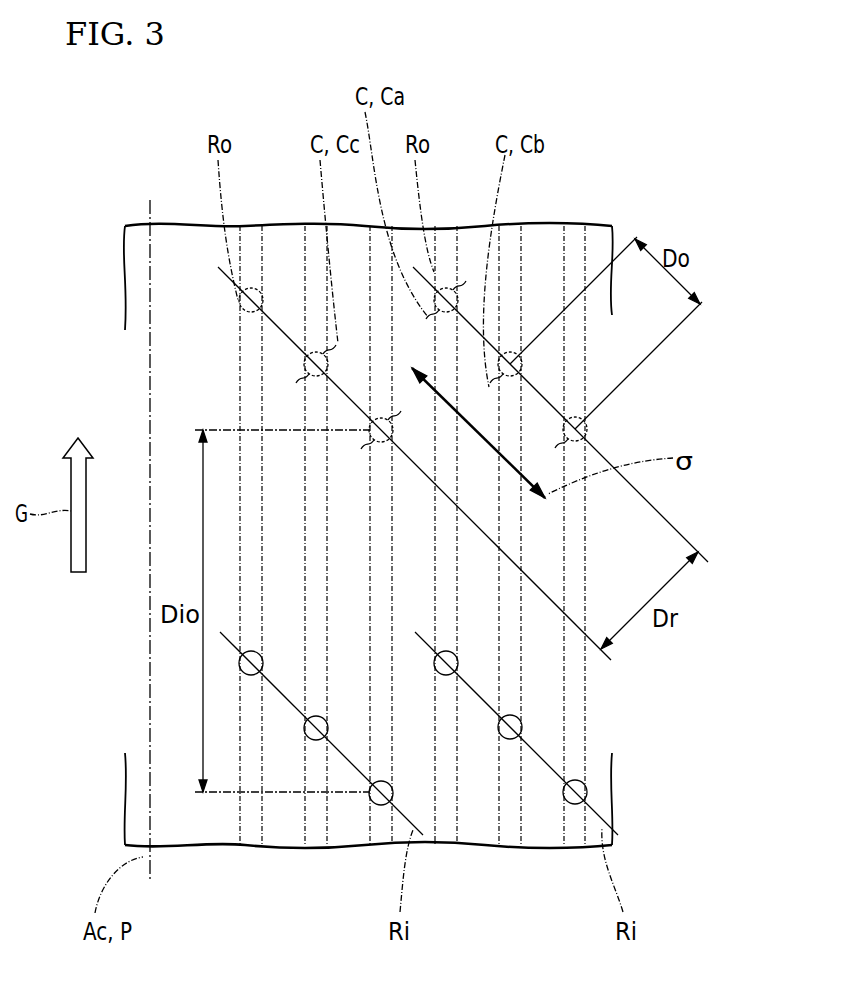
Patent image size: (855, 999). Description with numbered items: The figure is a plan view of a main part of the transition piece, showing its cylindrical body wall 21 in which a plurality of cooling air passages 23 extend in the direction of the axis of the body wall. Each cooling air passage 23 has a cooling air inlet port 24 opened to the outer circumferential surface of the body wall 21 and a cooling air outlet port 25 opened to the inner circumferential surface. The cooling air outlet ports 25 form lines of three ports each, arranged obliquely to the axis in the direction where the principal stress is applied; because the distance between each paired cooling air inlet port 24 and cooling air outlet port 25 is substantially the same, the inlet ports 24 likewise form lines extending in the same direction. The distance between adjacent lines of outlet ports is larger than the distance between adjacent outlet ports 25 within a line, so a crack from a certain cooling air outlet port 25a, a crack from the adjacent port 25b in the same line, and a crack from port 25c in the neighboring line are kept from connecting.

The body wall 21 is at (597, 247).
The cooling air passage 23 is at (240, 330).
The cooling air inlet port 24 is at (376, 805).
The cooling air outlet port 25 is at (378, 447).
The cooling air outlet port 25a is at (444, 288).
The cooling air outlet port 25b is at (520, 352).
The cooling air outlet port 25c is at (317, 350).